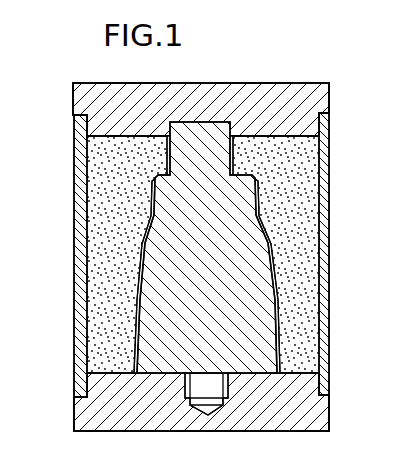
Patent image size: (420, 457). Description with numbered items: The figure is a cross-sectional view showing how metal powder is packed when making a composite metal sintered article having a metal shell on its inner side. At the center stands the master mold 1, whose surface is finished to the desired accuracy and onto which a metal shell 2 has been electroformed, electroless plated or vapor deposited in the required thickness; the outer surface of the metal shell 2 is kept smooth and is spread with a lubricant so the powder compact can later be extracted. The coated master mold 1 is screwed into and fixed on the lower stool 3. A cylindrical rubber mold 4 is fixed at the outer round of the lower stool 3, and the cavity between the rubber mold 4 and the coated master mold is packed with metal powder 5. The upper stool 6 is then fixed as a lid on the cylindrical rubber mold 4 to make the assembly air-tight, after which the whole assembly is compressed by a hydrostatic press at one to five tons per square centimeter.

The master mold 1 is at (265, 342).
The metal shell 2 is at (273, 297).
The lower stool 3 is at (308, 413).
The cylindrical rubber mold 4 is at (84, 183).
The metal powder 5 is at (308, 186).
The upper stool 6 is at (323, 97).